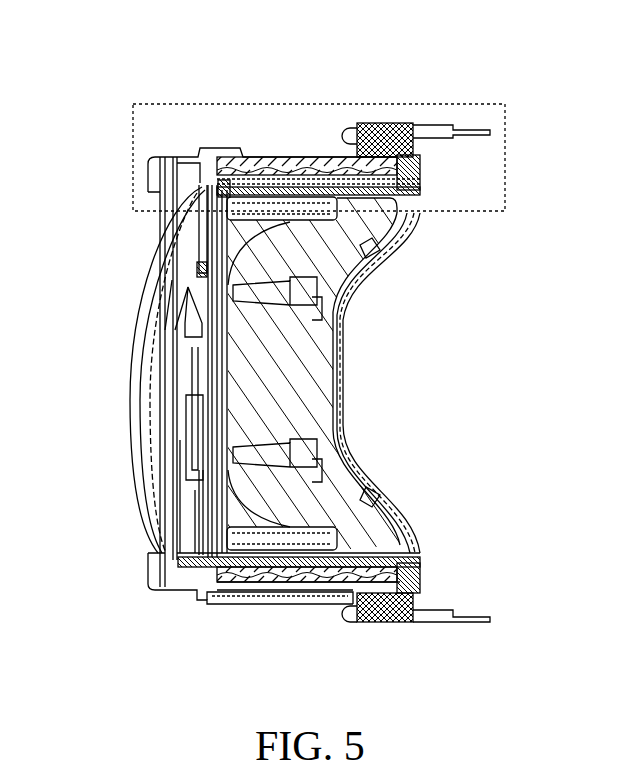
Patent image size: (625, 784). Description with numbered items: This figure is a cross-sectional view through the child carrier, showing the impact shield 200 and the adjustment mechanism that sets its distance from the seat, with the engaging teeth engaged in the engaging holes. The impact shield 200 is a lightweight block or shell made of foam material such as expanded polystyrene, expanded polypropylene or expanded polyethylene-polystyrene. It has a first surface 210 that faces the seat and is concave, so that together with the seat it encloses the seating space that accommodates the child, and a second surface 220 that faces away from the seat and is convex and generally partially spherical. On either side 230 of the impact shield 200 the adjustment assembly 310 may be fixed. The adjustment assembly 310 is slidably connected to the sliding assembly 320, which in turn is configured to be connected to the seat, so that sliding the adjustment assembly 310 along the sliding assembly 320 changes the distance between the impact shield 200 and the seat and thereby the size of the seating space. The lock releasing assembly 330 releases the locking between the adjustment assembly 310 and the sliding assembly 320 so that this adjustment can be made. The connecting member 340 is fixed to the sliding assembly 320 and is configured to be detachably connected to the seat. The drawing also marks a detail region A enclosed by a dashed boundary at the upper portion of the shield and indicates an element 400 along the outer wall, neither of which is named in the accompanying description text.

The detail region A is at (492, 92).
The impact shield 200 is at (280, 385).
The first surface 210 is at (333, 428).
The second surface 220 is at (152, 415).
The side 230 is at (285, 185).
The adjustment assembly 310 is at (240, 597).
The sliding assembly 320 is at (356, 624).
The lock releasing assembly 330 is at (275, 575).
The connecting member 340 is at (542, 589).
The frame 400 is at (140, 365).